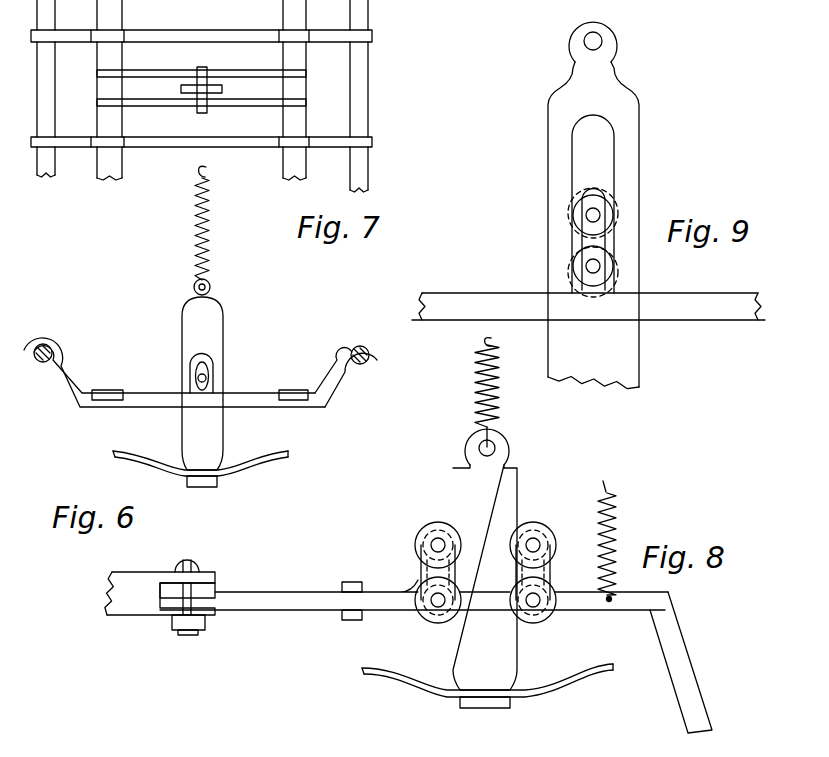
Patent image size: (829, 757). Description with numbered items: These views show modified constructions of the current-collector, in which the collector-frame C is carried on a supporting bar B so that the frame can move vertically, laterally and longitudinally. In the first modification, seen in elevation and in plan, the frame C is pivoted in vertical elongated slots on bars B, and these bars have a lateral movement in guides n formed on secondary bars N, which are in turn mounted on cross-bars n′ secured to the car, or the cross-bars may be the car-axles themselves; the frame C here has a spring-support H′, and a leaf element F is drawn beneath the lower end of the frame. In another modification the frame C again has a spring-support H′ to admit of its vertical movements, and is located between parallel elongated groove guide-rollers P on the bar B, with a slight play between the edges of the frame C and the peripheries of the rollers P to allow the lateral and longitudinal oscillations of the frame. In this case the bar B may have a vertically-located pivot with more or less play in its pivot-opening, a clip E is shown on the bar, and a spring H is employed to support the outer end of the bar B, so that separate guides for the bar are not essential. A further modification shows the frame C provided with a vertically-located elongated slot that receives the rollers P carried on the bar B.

In FIG. 7, the bar B is at (250, 64).
In FIG. 6, the bar B is at (233, 397).
In FIG. 9, the bar B is at (694, 341).
In FIG. 8, the bar B is at (250, 586).
In FIG. 7, the collector-frame C is at (207, 90).
In FIG. 6, the collector-frame C is at (210, 383).
In FIG. 9, the collector-frame C is at (579, 205).
In FIG. 8, the collector-frame C is at (485, 568).
In FIG. 7, the secondary bar N is at (318, 42).
In FIG. 6, the secondary bar N is at (354, 391).
In FIG. 7, the guide n is at (318, 137).
In FIG. 6, the guide n is at (293, 392).
In FIG. 7, the cross-bar n′ is at (210, 64).
In FIG. 6, the cross-bar n′ is at (357, 346).
In FIG. 6, the spring-support H′ is at (212, 240).
In FIG. 8, the spring-support H′ is at (459, 392).
In FIG. 8, the spring H is at (616, 541).
In FIG. 6, the leaf spring F is at (200, 468).
In FIG. 8, the leaf spring F is at (487, 682).
In FIG. 9, the guide-roller P is at (586, 158).
In FIG. 8, the guide-roller P is at (474, 568).
In FIG. 8, the clip E is at (345, 579).